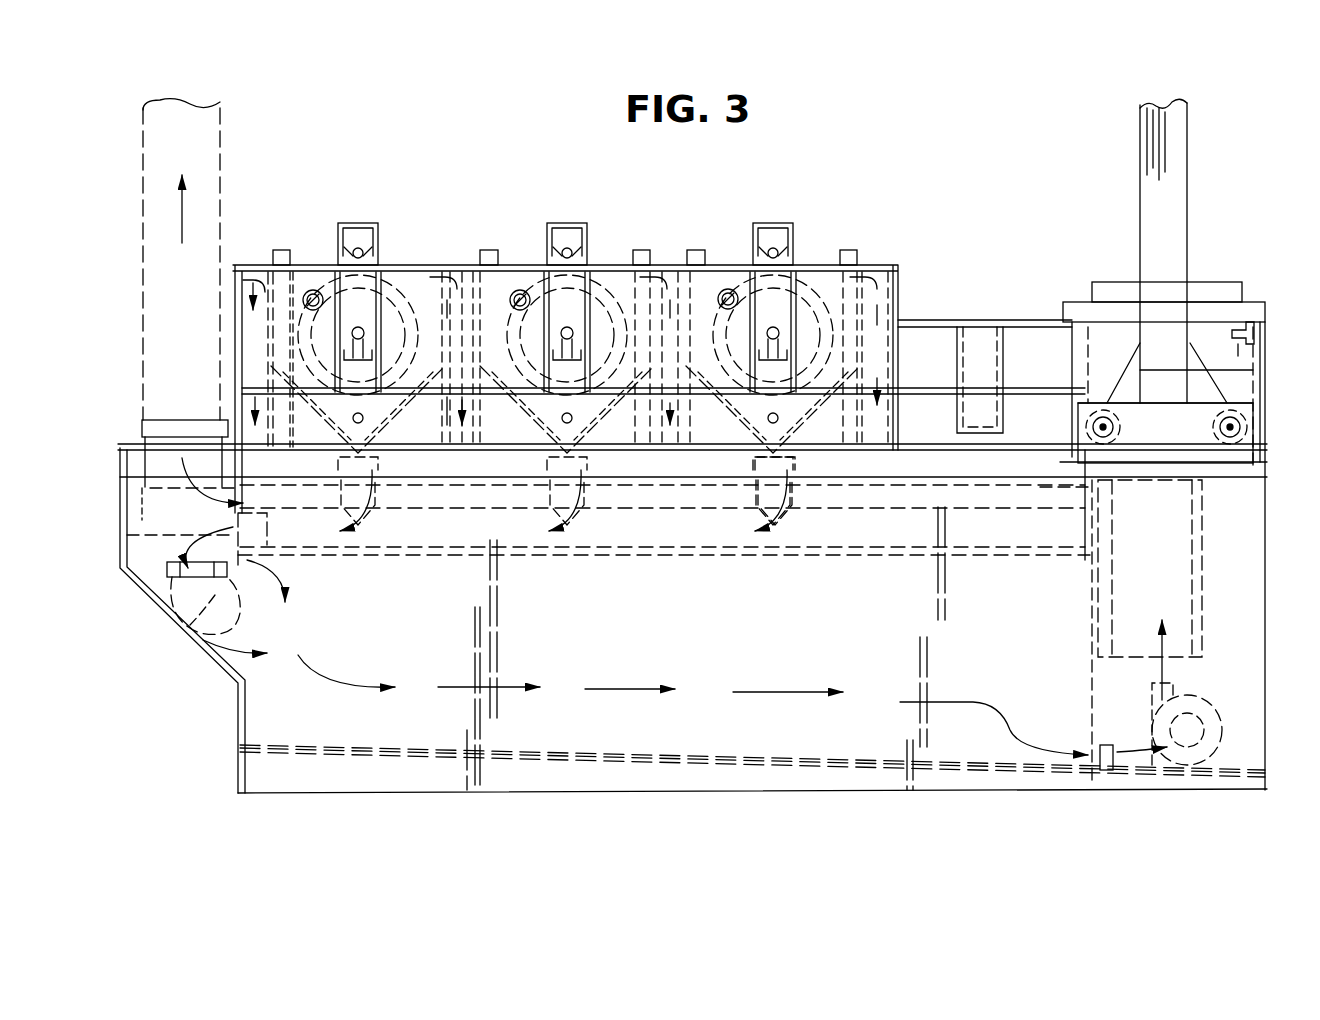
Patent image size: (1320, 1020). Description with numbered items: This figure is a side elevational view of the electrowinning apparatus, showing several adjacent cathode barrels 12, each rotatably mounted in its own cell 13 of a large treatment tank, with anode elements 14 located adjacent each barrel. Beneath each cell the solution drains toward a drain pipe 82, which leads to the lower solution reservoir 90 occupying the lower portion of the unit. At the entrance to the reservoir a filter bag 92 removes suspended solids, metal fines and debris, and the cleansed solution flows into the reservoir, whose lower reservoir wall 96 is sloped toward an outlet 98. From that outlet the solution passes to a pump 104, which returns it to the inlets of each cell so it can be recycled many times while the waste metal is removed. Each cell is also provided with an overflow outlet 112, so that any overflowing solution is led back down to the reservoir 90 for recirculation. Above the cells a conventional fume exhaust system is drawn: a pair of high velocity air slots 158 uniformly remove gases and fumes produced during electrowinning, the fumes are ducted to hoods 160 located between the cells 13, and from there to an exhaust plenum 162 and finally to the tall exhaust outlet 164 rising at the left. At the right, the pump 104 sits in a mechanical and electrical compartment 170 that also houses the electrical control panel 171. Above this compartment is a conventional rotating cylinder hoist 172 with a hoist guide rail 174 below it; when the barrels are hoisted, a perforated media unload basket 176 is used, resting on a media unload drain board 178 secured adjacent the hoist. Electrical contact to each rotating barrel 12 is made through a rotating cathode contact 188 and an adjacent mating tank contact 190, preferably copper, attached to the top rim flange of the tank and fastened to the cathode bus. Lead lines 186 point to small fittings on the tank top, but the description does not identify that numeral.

The cathode barrel 12 is at (803, 290).
The cell 13 is at (728, 278).
The anode element 14 is at (850, 276).
The drain pipe 82 is at (780, 518).
The lower solution reservoir 90 is at (238, 733).
The filter bag 92 is at (178, 610).
The lower reservoir wall 96 is at (608, 752).
The outlet 98 is at (1112, 767).
The pump 104 is at (1210, 717).
The overflow outlet 112 is at (521, 290).
The high velocity air slot 158 is at (267, 278).
The hood 160 is at (452, 285).
The exhaust plenum 162 is at (153, 522).
The exhaust outlet 164 is at (160, 348).
The mechanical and electrical compartment 170 is at (1245, 610).
The electrical control panel 171 is at (1178, 527).
The rotating cylinder hoist 172 is at (1150, 187).
The hoist guide rail 174 is at (1258, 430).
The perforated media unload basket 176 is at (1203, 287).
The media unload drain board 178 is at (1245, 310).
The tabs 186 is at (642, 250).
The rotating cathode contact 188 is at (566, 250).
The mating tank contact 190 is at (585, 232).